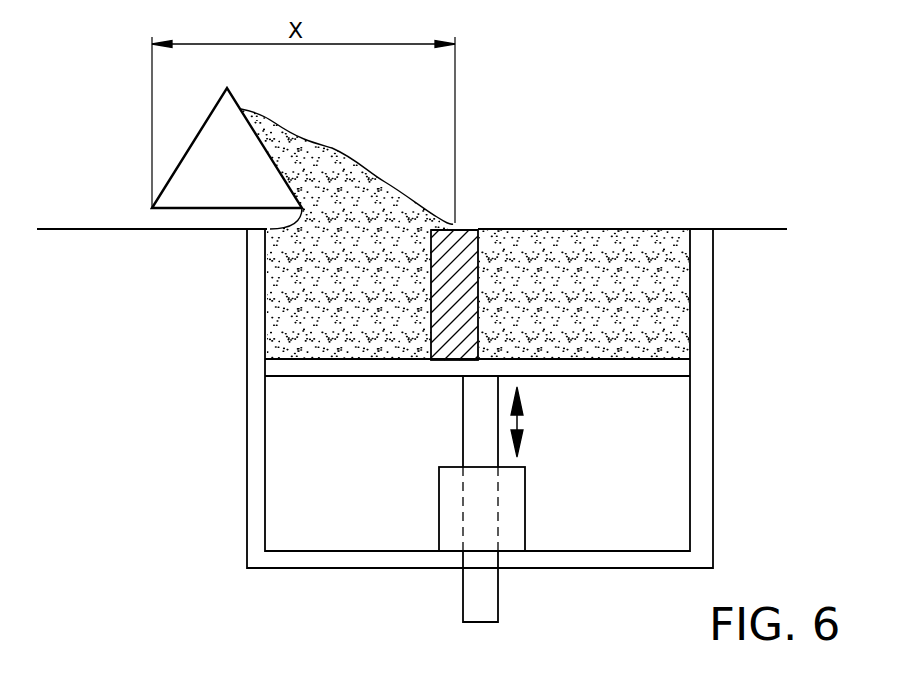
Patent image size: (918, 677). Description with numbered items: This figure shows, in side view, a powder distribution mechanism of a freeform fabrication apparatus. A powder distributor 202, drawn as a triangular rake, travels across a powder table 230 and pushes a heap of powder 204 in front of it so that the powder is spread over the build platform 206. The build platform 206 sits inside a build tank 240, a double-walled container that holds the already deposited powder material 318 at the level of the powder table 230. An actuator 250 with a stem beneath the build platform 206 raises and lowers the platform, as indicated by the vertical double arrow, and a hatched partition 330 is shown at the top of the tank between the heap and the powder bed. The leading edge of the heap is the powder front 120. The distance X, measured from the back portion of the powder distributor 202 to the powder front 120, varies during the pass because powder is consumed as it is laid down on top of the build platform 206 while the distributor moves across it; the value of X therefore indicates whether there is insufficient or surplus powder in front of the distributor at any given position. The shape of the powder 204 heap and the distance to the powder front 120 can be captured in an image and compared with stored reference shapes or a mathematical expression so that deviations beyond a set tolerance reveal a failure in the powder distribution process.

The powder front 120 is at (453, 224).
The powder distributor 202 is at (217, 165).
The powder 204 is at (342, 183).
The build platform 206 is at (313, 372).
The powder table 230 is at (100, 230).
The build tank 240 is at (257, 432).
The platform actuator 250 is at (475, 440).
The powder material 318 is at (610, 262).
The partition wall 330 is at (463, 268).